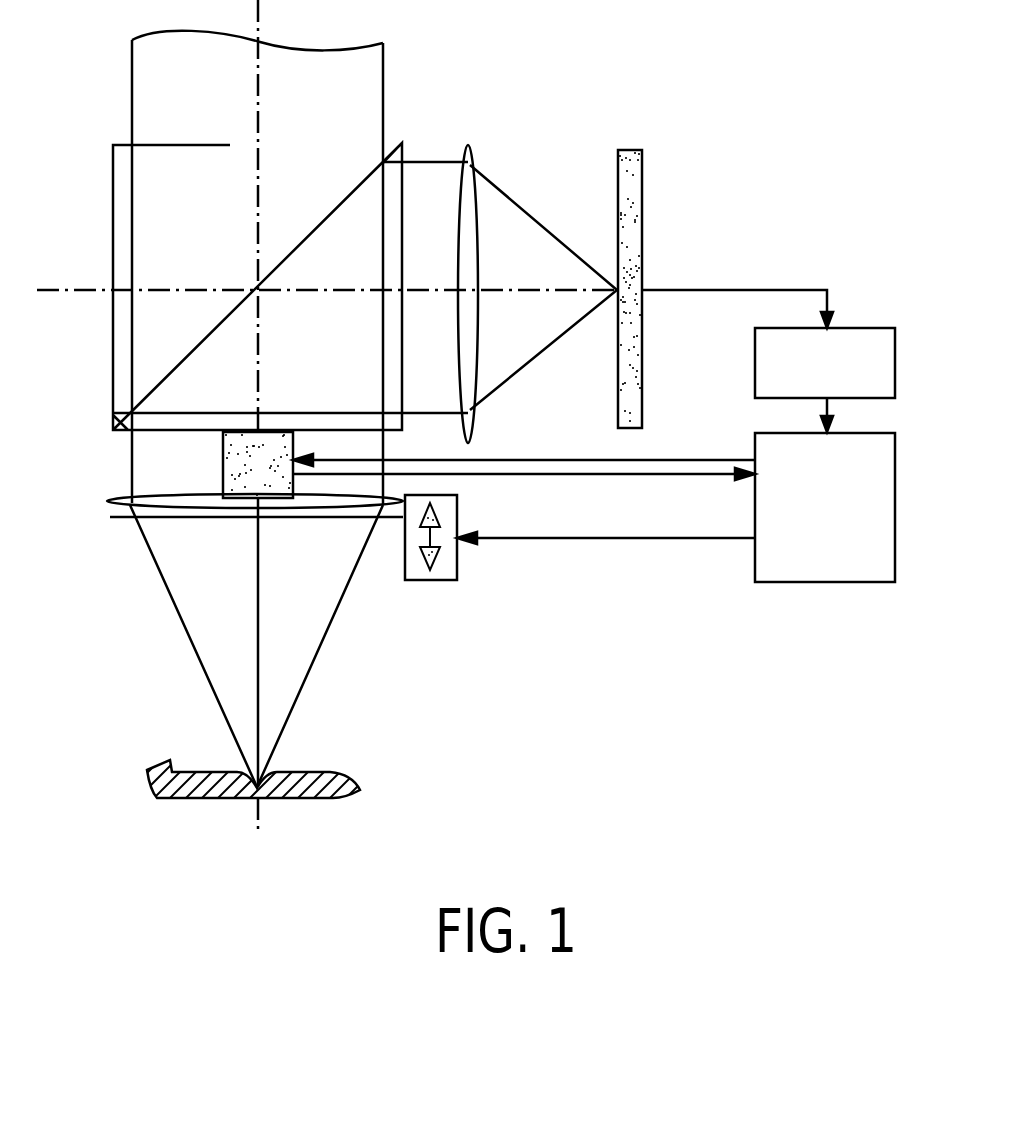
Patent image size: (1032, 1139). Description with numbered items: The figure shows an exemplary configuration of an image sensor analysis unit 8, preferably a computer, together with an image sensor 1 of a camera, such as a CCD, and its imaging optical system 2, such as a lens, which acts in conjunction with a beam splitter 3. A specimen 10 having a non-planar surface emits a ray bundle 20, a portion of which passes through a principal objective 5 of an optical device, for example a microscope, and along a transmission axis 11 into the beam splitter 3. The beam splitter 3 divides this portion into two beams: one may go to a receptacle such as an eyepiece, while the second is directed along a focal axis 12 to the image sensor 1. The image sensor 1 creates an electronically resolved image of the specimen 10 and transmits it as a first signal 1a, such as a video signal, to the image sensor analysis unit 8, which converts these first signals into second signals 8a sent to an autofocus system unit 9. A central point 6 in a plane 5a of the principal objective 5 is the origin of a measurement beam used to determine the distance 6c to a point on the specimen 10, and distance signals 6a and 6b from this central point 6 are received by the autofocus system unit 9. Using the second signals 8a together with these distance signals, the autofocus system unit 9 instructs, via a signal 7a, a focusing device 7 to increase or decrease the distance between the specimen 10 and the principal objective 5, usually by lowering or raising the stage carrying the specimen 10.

The image sensor 1 is at (643, 190).
The first signal 1a is at (760, 290).
The imaging optical system 2 is at (473, 422).
The beam splitter 3 is at (113, 210).
The principal objective 5 is at (117, 500).
The plane of the principal objective 5a is at (118, 520).
The central point 6 is at (222, 453).
The distance signal 6a is at (673, 458).
The distance signal 6b is at (555, 477).
The distance 6c is at (257, 620).
The focusing device 7 is at (433, 583).
The signal 7a is at (602, 540).
The image sensor analysis unit 8 is at (897, 367).
The second signal 8a is at (833, 407).
The autofocus system unit 9 is at (817, 583).
The specimen 10 is at (360, 788).
The transmission axis 11 is at (275, 8).
The focal axis 12 is at (62, 298).
The ray bundle 20 is at (185, 593).